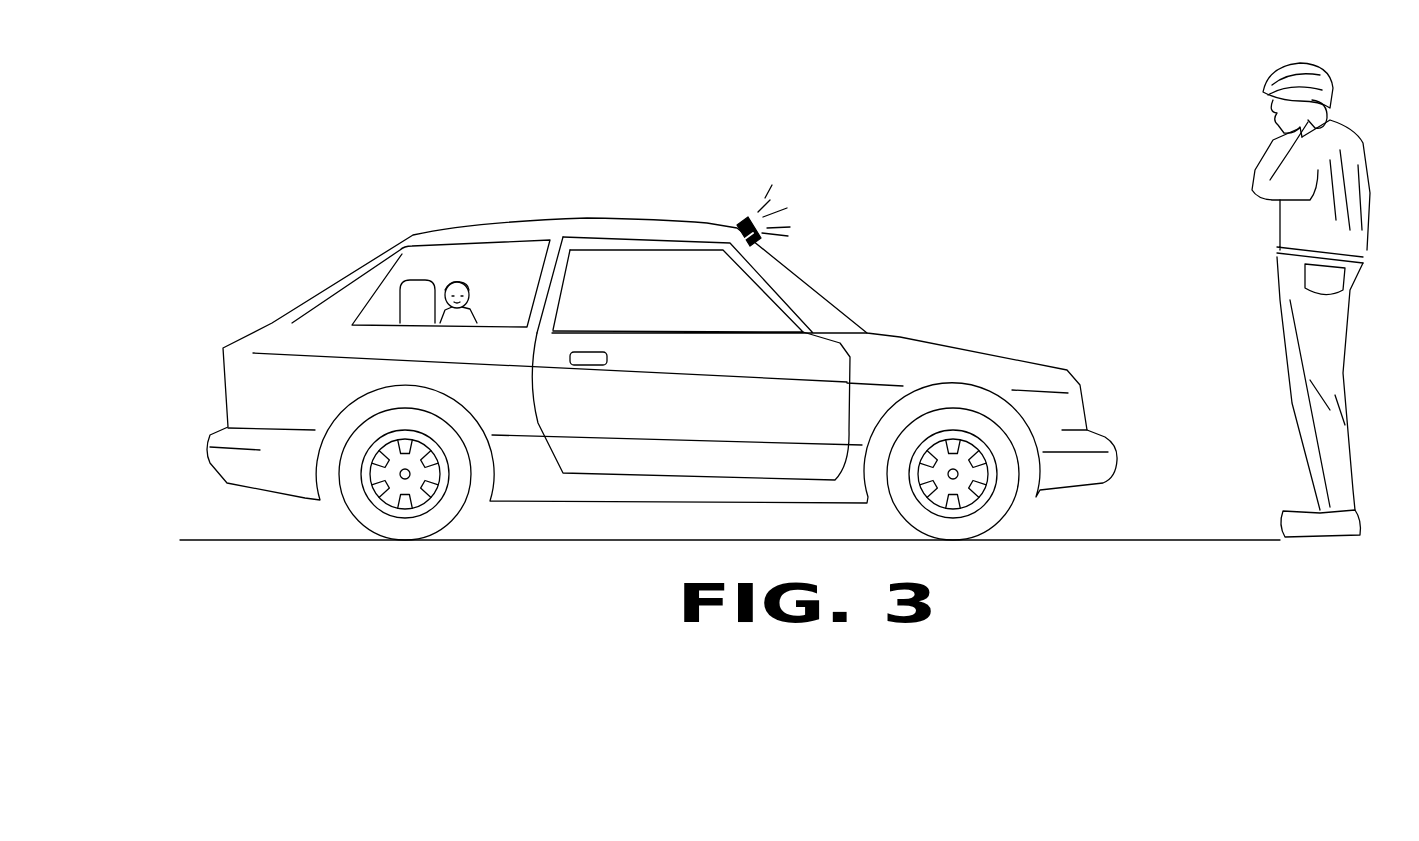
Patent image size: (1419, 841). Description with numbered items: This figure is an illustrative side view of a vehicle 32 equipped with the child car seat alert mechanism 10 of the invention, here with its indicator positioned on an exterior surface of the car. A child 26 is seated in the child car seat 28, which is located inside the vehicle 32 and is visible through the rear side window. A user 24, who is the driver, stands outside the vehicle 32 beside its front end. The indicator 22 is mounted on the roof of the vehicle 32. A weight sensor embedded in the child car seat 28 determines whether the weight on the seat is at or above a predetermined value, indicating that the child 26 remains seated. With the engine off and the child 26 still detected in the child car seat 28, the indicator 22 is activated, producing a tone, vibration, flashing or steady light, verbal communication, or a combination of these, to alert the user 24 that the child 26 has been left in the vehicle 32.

The child car seat alert mechanism 10 is at (612, 270).
The indicator 22 is at (773, 213).
The user 24 is at (1277, 150).
The child 26 is at (463, 280).
The child car seat 28 is at (418, 292).
The vehicle 32 is at (262, 343).